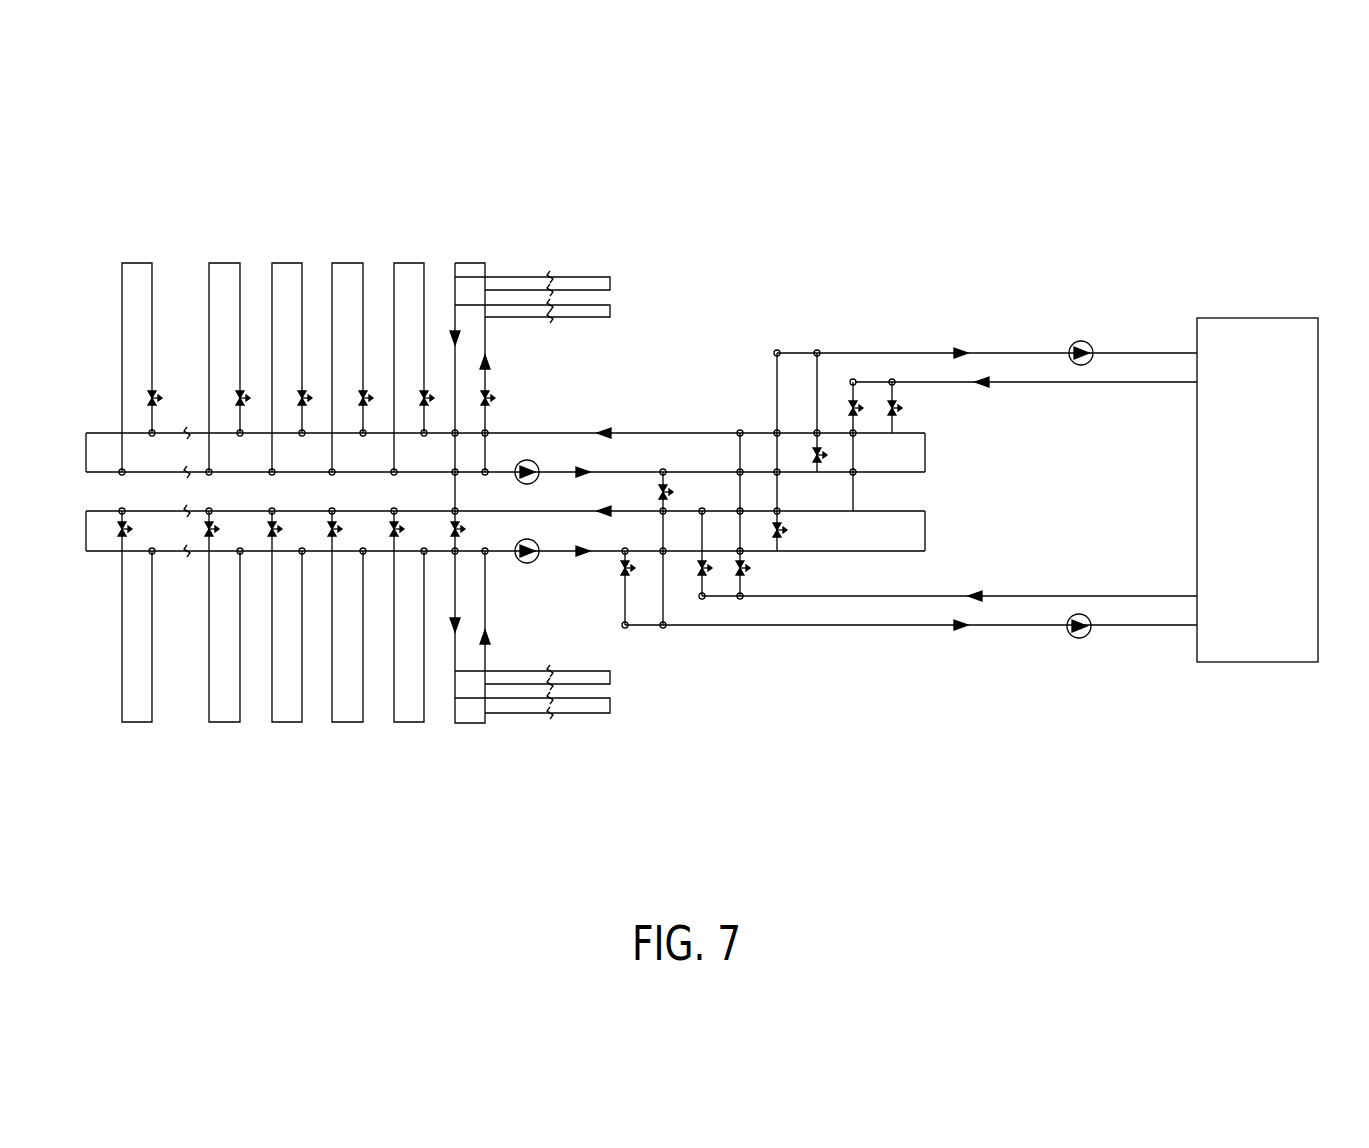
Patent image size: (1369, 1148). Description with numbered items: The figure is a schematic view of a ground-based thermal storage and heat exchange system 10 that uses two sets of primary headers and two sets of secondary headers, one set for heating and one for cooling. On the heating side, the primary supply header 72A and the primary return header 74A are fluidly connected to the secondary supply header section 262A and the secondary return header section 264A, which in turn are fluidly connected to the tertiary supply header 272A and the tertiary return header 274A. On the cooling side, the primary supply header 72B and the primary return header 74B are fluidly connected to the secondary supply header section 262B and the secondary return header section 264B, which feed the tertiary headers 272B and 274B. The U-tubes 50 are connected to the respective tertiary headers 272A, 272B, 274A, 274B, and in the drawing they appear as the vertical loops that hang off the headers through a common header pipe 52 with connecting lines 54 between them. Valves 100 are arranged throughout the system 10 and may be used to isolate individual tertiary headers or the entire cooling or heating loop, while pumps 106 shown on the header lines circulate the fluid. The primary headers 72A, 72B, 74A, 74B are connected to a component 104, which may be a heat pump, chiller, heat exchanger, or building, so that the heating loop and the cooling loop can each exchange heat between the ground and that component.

The ground-based thermal storage and heat exchange system 10 is at (1100, 128).
The U-tubes 50 is at (610, 284).
The header pipe 52 is at (485, 288).
The connecting lines 54 is at (454, 318).
The primary supply header 72A is at (1033, 385).
The primary supply header 72B is at (1048, 594).
The primary return header 74A is at (1000, 352).
The primary return header 74B is at (945, 628).
The valves 100 is at (742, 563).
The component 104 is at (1273, 497).
The pump 106 is at (528, 460).
The secondary supply header section 262A is at (641, 432).
The secondary supply header section 262B is at (485, 510).
The secondary return header section 264A is at (627, 470).
The secondary return header section 264B is at (565, 553).
The tertiary supply header 272A is at (486, 383).
The tertiary supply header 272B is at (455, 608).
The tertiary return header 274A is at (455, 330).
The tertiary return header 274B is at (488, 650).